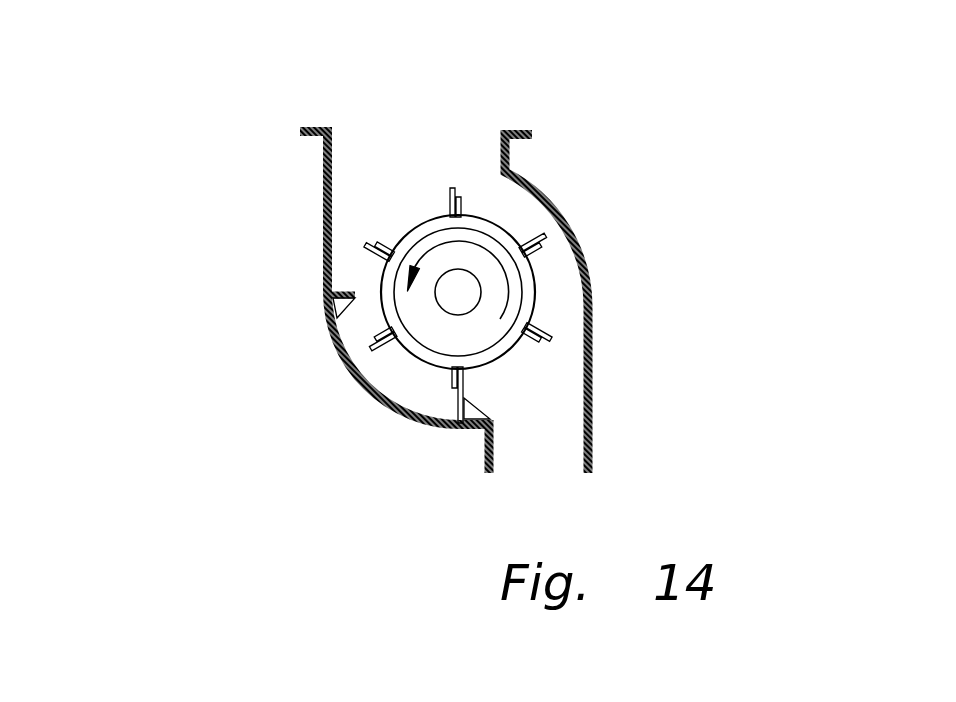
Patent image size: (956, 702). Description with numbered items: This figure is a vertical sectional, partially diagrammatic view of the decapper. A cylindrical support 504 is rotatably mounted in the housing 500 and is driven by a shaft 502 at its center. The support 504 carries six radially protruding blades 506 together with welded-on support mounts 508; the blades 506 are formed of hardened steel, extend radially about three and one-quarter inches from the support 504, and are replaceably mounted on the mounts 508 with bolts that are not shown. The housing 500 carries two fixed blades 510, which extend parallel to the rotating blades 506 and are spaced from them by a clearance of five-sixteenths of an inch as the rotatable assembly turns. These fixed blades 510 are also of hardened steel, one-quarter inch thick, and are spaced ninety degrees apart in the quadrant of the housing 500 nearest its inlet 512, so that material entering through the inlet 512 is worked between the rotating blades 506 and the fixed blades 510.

The housing 500 is at (592, 278).
The shaft 502 is at (458, 292).
The cylindrical support 504 is at (435, 226).
The radially protruding blades 506 is at (365, 256).
The support mounts 508 is at (390, 250).
The fixed blades 510 is at (337, 290).
The inlet 512 is at (438, 152).